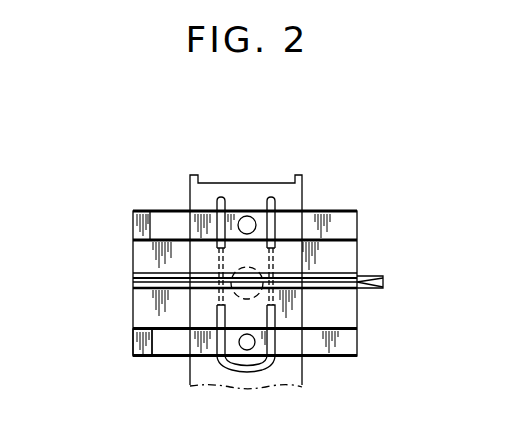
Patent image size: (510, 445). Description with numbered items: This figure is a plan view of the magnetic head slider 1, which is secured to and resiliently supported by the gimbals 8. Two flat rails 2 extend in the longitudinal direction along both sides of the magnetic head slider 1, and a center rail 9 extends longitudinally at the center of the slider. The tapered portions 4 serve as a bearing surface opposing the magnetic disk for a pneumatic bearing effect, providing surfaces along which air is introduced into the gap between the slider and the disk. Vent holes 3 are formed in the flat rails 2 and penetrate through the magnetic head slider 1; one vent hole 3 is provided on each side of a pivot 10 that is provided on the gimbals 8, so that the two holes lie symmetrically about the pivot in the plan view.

The magnetic head slider 1 is at (349, 212).
The flat rails 2 is at (318, 215).
The vent holes 3 is at (243, 349).
The tapered portions 4 is at (133, 345).
The gimbals 8 is at (250, 188).
The center rail 9 is at (372, 275).
The pivot 10 is at (232, 272).